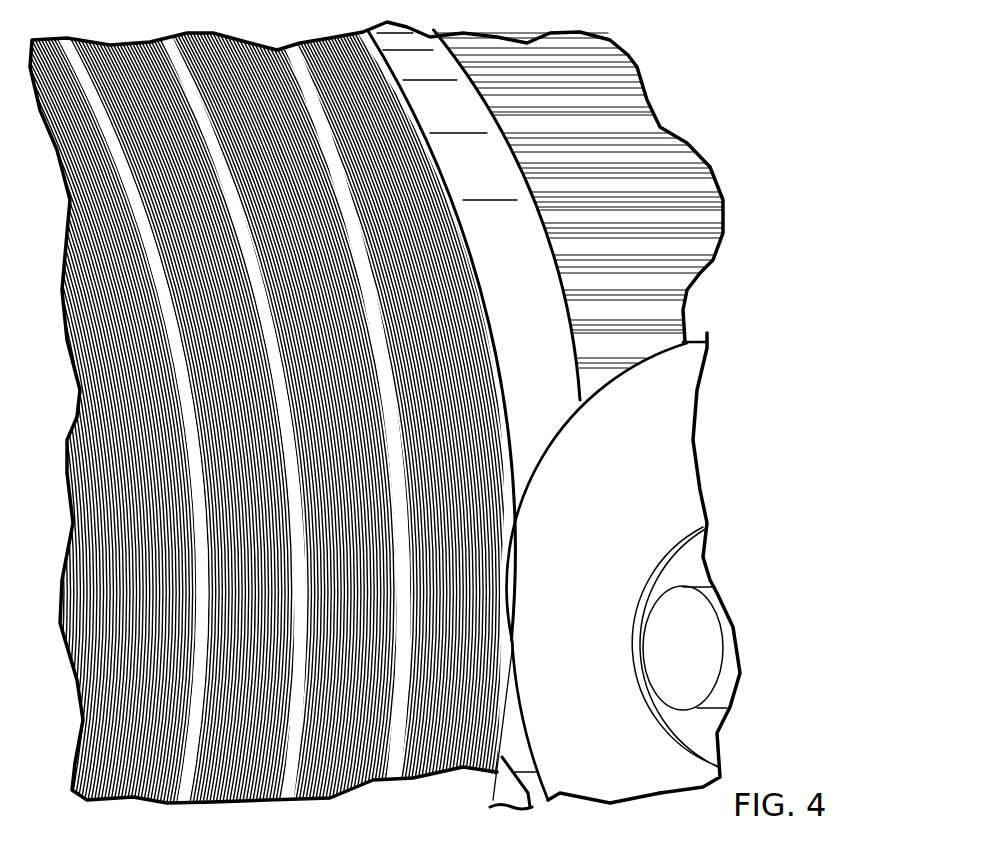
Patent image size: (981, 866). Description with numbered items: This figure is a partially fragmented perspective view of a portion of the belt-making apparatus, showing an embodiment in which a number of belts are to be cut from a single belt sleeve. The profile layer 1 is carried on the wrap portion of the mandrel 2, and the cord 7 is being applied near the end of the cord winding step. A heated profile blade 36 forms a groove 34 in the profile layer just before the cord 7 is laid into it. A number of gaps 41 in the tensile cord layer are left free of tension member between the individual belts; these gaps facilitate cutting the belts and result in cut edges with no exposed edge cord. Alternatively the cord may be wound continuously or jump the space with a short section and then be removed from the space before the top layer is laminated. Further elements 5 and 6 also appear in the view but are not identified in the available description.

The profile layer 1 is at (540, 380).
The mandrel 2 is at (658, 318).
The bead 5 is at (512, 800).
The bead portion 6 is at (668, 465).
The cord 7 is at (512, 475).
The groove 34 is at (505, 720).
The heated profile blade 36 is at (503, 778).
The gaps 41 is at (403, 507).